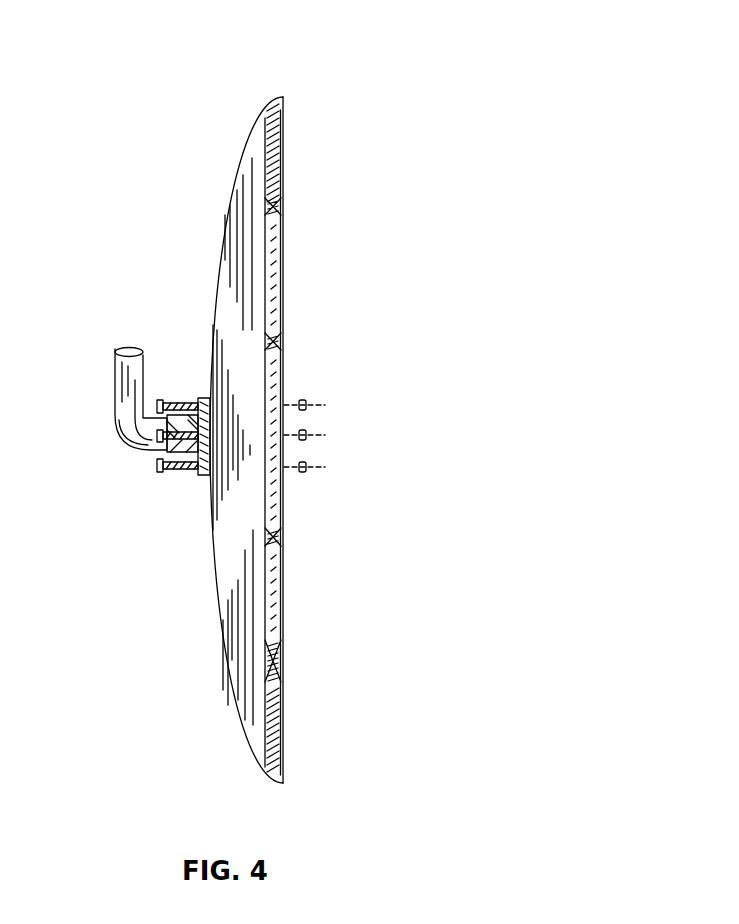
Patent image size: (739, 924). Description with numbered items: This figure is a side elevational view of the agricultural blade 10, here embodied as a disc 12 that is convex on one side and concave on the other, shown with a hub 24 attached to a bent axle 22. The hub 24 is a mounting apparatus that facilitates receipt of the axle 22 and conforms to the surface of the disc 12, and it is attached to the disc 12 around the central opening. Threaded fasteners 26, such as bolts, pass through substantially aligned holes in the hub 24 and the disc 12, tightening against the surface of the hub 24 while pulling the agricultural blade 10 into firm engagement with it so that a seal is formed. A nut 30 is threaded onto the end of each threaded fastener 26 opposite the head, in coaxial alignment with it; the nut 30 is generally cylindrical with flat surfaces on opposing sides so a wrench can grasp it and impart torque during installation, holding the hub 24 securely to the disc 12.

The agricultural blade 10 is at (323, 61).
The disc 12 is at (311, 175).
The bent axle 22 is at (106, 379).
The hub 24 is at (205, 476).
The threaded fastener 26 is at (168, 473).
The nut 30 is at (316, 401).